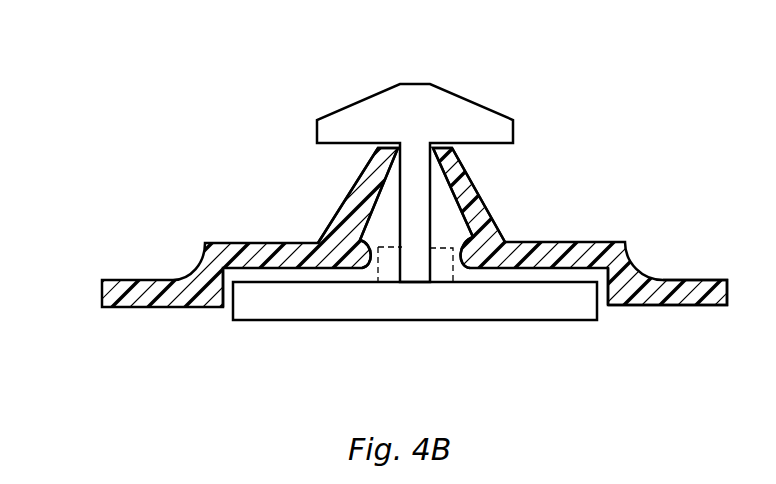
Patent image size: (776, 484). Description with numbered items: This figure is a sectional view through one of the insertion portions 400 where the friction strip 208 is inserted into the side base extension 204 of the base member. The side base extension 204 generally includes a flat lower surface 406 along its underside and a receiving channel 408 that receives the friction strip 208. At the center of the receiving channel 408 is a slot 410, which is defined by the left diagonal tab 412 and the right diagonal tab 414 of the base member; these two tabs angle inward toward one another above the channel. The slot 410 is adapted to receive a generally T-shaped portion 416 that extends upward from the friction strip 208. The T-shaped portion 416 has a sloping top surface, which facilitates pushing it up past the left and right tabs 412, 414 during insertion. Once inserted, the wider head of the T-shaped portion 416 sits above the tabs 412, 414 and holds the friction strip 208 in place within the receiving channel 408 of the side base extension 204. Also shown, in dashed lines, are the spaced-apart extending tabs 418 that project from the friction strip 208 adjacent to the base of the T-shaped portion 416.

The insertion portion 400 is at (317, 340).
The side base extension 204 is at (597, 242).
The friction strip 208 is at (437, 320).
The flat lower surface 406 is at (700, 305).
The receiving channel 408 is at (228, 307).
The slot 410 is at (382, 230).
The left diagonal tab 412 is at (363, 172).
The right diagonal tab 414 is at (475, 185).
The generally T-shaped portion 416 is at (450, 92).
The spaced-apart extending tabs 418 is at (477, 230).